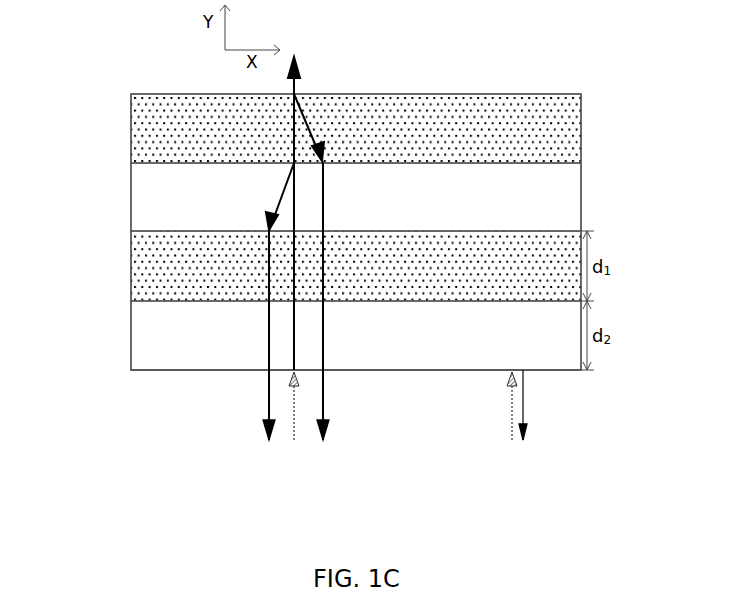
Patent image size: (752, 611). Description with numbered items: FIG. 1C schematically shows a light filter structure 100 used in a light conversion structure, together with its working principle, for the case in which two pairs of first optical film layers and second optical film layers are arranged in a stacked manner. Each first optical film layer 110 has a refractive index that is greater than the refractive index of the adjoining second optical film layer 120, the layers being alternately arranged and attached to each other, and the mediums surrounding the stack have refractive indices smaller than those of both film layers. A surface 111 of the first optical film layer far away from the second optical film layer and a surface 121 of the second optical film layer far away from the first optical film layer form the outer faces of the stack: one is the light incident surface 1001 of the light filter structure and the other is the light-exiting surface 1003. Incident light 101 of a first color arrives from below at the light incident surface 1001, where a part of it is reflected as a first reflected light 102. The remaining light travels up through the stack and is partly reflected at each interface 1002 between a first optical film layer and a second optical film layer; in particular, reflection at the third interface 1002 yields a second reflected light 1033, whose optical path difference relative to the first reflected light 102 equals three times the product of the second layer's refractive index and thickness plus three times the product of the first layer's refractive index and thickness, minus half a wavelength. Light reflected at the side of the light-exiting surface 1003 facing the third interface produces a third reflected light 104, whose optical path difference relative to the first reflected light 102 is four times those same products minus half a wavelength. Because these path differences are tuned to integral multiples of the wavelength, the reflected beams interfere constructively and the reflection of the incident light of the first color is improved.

The light filter structure 100 is at (356, 191).
The light-exiting surface 1003 is at (309, 111).
The surface of the first optical film layer 111 is at (309, 111).
The interface 1002 is at (323, 197).
The first optical film layer 110 is at (396, 253).
The second optical film layer 120 is at (392, 354).
The light incident surface 1001 is at (303, 388).
The surface of the second optical film layer 121 is at (303, 388).
The second reflected light 1033 is at (205, 346).
The third reflected light 104 is at (376, 301).
The incident light of first color 101 is at (403, 433).
The first reflected light 102 is at (469, 442).